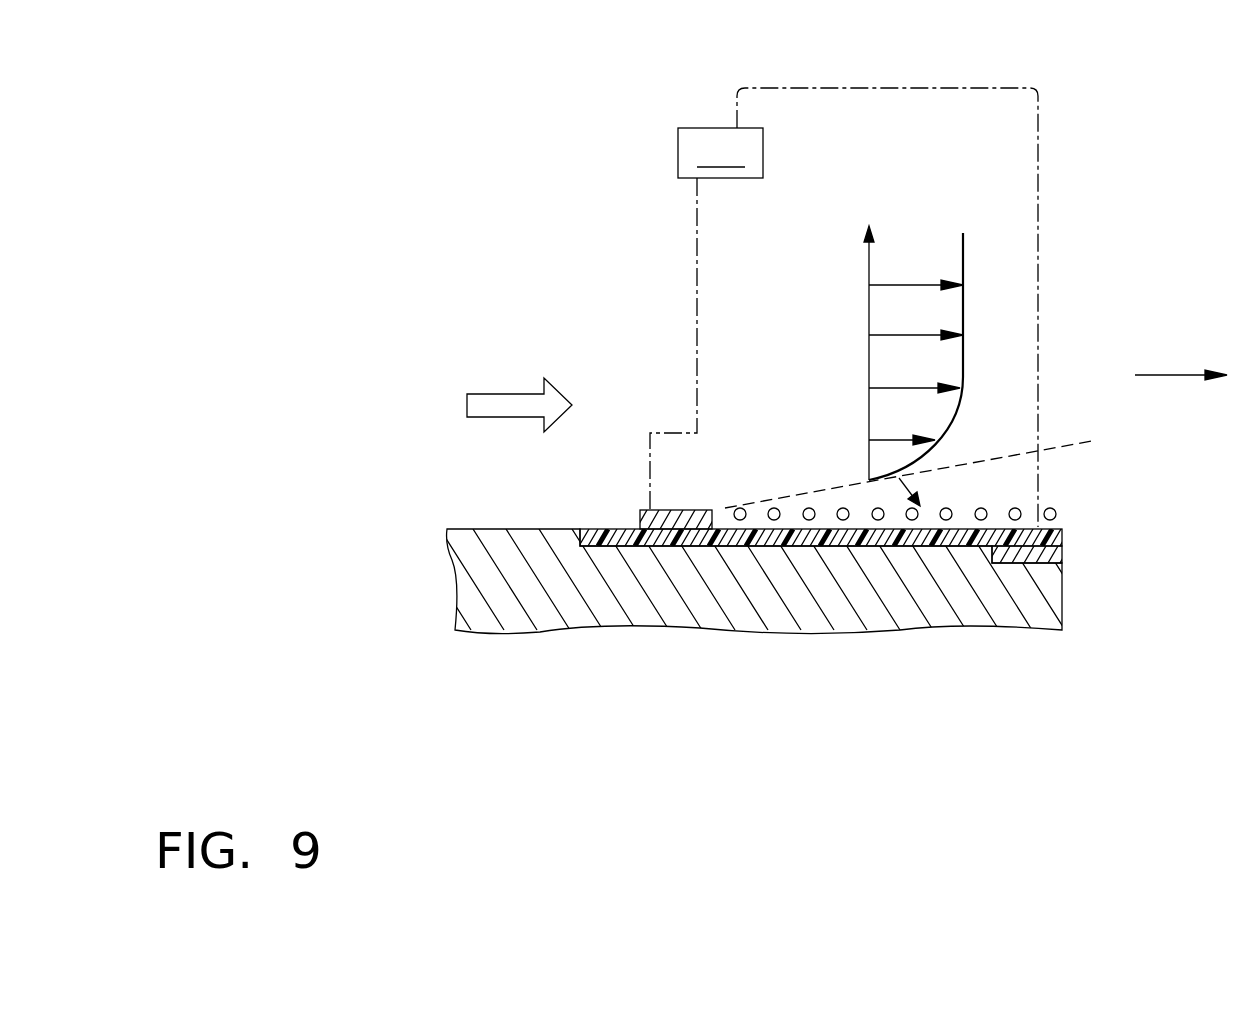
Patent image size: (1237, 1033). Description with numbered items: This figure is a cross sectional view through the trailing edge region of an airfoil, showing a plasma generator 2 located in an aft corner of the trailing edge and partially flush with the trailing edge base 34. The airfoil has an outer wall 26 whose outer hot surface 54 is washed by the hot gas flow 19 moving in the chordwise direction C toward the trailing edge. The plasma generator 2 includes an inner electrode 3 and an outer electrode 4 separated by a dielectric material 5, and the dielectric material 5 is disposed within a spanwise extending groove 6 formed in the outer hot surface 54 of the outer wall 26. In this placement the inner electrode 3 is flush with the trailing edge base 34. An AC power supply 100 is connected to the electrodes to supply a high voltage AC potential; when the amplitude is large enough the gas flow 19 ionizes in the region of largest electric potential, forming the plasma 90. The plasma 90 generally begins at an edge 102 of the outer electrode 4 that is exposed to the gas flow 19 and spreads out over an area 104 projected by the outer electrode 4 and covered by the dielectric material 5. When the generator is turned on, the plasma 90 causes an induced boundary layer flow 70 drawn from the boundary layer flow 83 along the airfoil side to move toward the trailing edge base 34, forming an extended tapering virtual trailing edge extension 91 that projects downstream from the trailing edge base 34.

The plasma generator 2 is at (685, 500).
The inner electrode 3 is at (1020, 563).
The outer electrode 4 is at (670, 510).
The dielectric material 5 is at (735, 547).
The spanwise extending groove 6 is at (590, 529).
The hot gas flow 19 is at (503, 392).
The outer wall 26 is at (455, 572).
The trailing edge base 34 is at (1062, 598).
The outer hot surface 54 is at (494, 529).
The induced boundary layer flow 70 is at (899, 478).
The boundary layer flow 83 is at (965, 372).
The plasma 90 is at (1052, 510).
The virtual trailing edge extension 91 is at (1053, 447).
The AC power supply 100 is at (844, 307).
The edge of outer electrode 102 is at (715, 509).
The area projected by outer electrode 104 is at (925, 527).
The chordwise direction C is at (1180, 372).